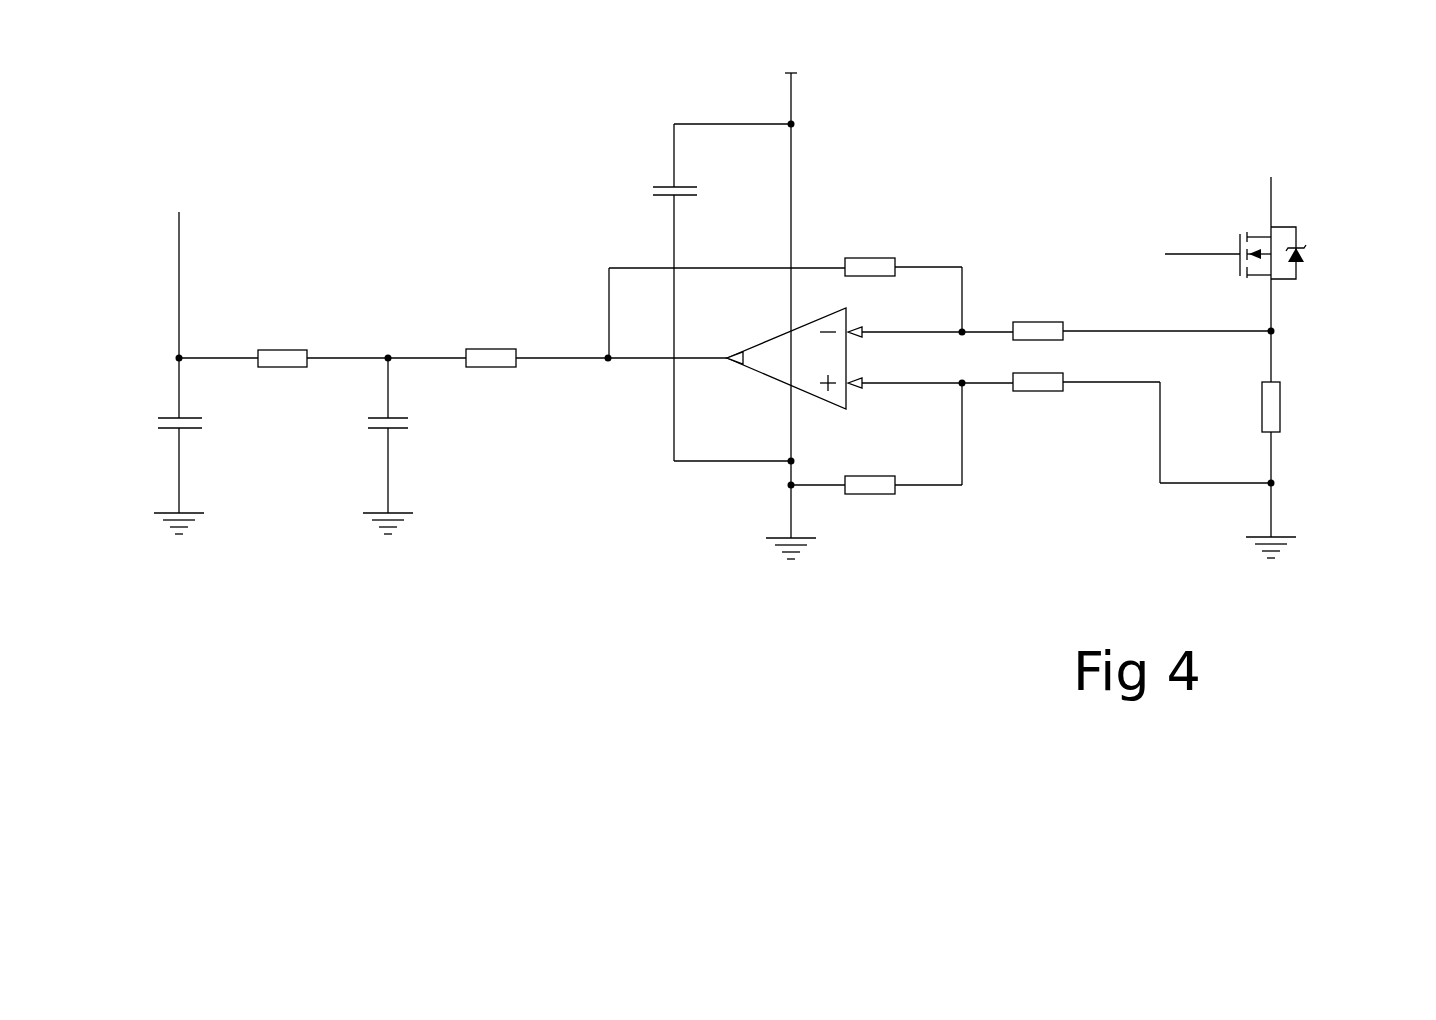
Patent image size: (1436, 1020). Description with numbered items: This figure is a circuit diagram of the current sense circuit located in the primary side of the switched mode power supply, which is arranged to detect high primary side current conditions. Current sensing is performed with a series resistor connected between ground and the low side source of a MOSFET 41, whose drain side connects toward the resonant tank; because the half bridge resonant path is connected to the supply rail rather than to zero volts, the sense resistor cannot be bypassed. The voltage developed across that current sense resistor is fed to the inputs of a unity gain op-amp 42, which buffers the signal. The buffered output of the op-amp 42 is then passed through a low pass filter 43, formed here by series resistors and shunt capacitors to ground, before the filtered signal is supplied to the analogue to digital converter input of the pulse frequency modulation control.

The MOSFET 41 is at (1243, 240).
The unity gain op-amp 42 is at (781, 361).
The low pass filter 43 is at (375, 254).